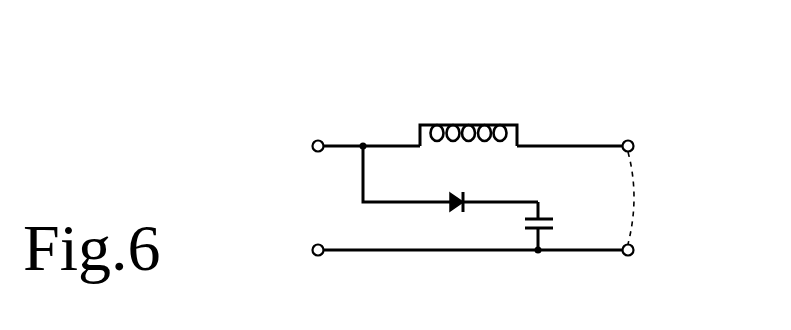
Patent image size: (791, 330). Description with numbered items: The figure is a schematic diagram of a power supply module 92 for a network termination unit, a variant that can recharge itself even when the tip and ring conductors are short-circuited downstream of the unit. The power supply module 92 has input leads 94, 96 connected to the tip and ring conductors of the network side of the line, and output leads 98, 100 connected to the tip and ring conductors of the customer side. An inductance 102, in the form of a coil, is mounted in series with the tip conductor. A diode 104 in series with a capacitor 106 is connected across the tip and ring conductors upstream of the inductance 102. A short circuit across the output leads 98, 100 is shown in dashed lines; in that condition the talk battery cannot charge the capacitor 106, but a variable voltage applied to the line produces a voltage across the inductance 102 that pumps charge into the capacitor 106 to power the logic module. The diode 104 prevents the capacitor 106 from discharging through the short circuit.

The power supply module 92 is at (405, 110).
The input lead 94 is at (318, 140).
The input lead 96 is at (312, 254).
The output lead 98 is at (633, 141).
The output lead 100 is at (634, 248).
The inductance 102 is at (514, 126).
The diode 104 is at (450, 201).
The capacitor 106 is at (541, 216).